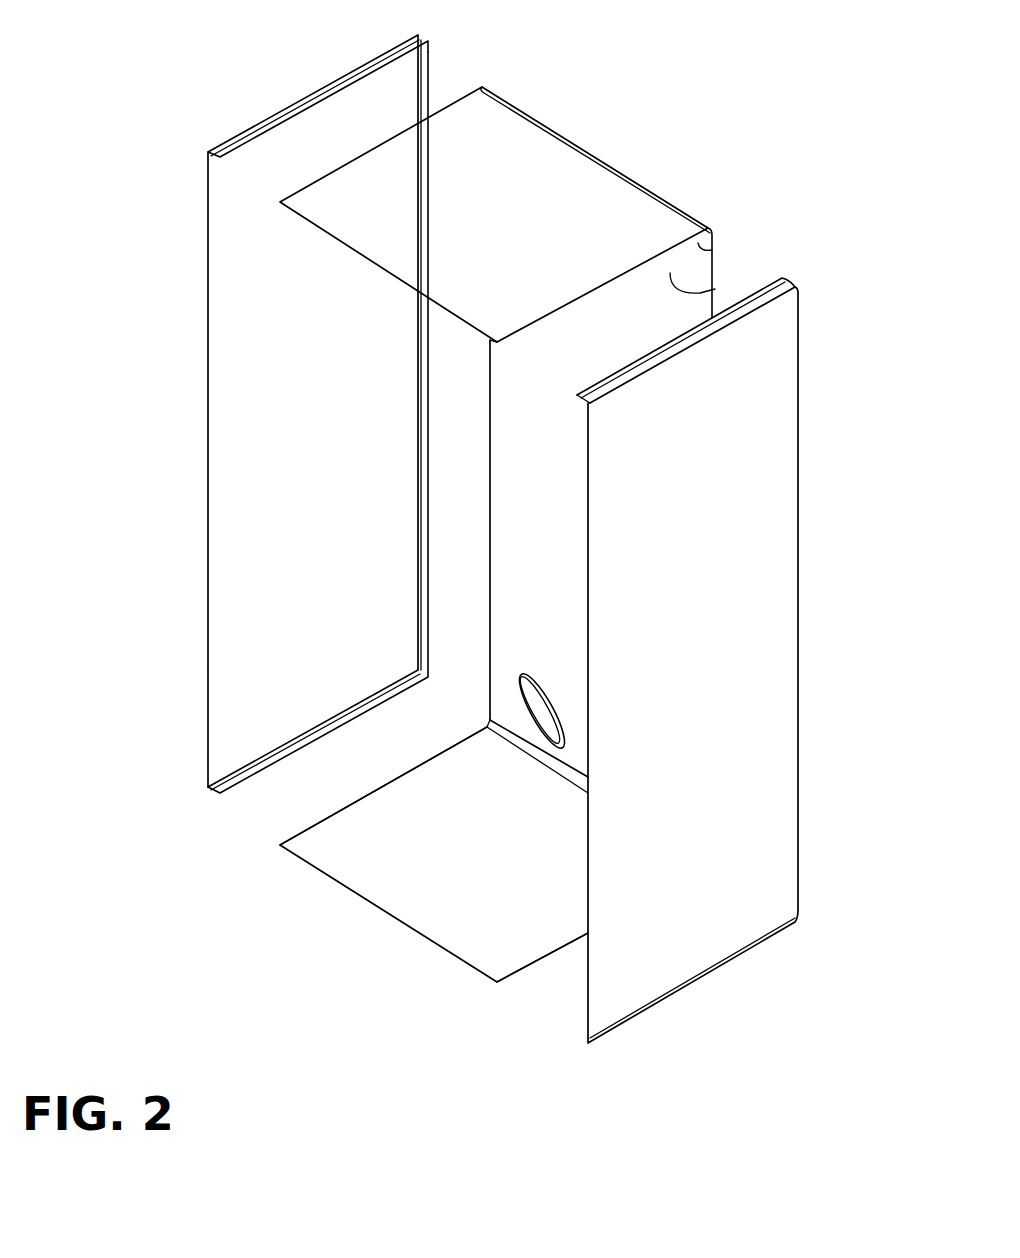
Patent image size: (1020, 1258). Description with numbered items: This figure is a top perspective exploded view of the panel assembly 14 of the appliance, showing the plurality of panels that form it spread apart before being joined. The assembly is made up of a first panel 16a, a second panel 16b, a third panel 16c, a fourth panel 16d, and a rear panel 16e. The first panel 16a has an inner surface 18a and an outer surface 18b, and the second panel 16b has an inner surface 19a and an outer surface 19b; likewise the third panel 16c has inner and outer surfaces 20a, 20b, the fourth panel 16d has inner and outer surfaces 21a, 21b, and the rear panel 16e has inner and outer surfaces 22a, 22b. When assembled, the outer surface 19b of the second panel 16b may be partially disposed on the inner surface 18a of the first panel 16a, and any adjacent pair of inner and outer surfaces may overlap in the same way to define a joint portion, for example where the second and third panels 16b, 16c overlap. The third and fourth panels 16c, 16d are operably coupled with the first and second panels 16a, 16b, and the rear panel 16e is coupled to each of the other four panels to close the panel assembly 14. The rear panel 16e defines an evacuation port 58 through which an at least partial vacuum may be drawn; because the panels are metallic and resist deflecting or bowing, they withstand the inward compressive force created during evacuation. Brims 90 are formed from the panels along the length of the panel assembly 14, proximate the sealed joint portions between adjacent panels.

The panel assembly 14 is at (768, 122).
The first panel 16a is at (250, 345).
The second panel 16b is at (447, 147).
The third panel 16c is at (735, 510).
The fourth panel 16d is at (463, 908).
The rear panel 16e is at (715, 289).
The inner surface of first panel 18a is at (247, 672).
The outer surface of first panel 18b is at (313, 92).
The inner surface of second panel 19a is at (618, 277).
The outer surface of second panel 19b is at (548, 183).
The inner surface of third panel 20a is at (583, 988).
The outer surface of third panel 20b is at (750, 772).
The inner surface of fourth panel 21a is at (370, 862).
The outer surface of fourth panel 21b is at (552, 958).
The inner surface of rear panel 22a is at (712, 250).
The outer surface of rear panel 22b is at (537, 673).
The evacuation port 58 is at (540, 703).
The brims 90 is at (207, 160).